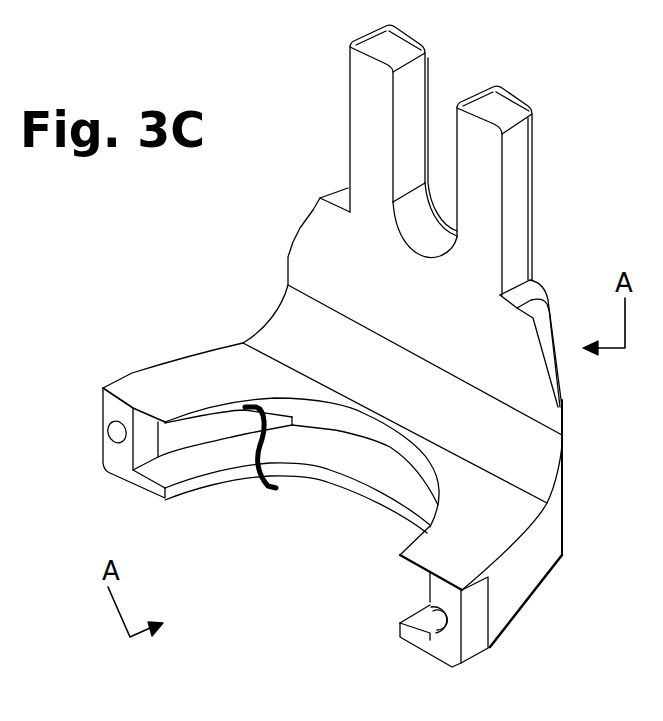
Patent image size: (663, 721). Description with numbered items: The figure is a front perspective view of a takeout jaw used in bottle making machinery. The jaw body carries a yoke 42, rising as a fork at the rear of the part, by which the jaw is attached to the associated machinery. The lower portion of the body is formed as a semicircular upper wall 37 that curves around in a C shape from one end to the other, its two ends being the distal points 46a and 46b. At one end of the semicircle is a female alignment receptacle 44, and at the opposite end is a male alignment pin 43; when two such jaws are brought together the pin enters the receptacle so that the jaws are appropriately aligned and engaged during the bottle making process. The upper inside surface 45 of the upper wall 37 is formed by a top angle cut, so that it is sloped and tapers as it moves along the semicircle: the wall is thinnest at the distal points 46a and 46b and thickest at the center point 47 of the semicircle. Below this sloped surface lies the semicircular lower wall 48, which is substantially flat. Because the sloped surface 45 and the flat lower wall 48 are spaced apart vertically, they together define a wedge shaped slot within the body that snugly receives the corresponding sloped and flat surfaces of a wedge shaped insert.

The semicircular upper wall 37 is at (192, 353).
The yoke 42 is at (540, 176).
The male alignment pin 43 is at (437, 640).
The female alignment receptacle 44 is at (97, 431).
The upper inside surface 45 is at (267, 463).
The distal point 46a is at (167, 418).
The distal point 46b is at (412, 553).
The center point 47 is at (363, 420).
The semicircular lower wall 48 is at (377, 487).